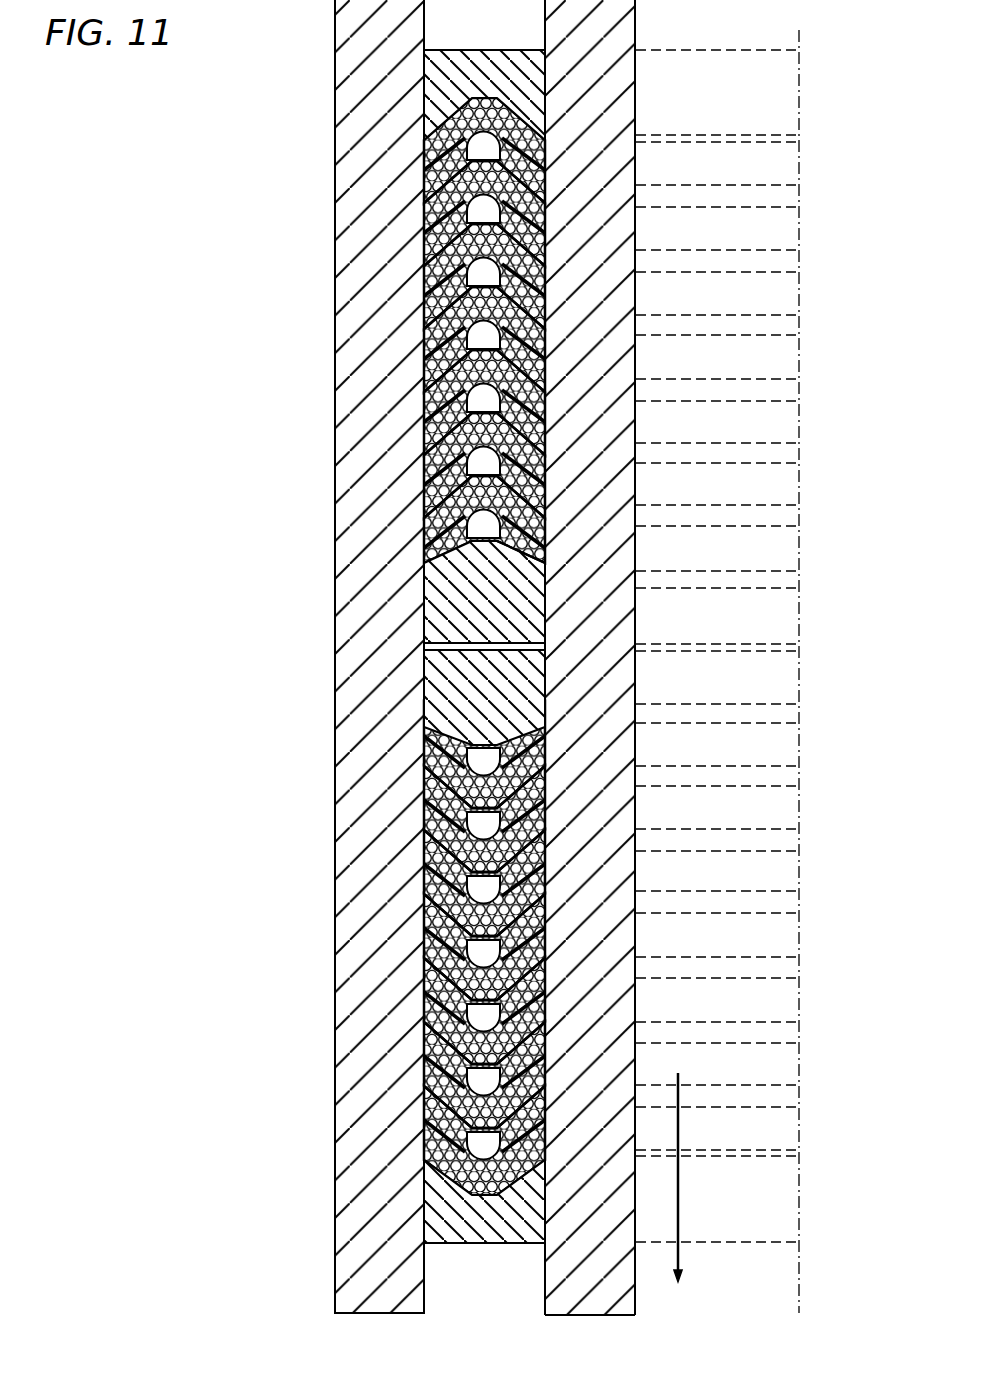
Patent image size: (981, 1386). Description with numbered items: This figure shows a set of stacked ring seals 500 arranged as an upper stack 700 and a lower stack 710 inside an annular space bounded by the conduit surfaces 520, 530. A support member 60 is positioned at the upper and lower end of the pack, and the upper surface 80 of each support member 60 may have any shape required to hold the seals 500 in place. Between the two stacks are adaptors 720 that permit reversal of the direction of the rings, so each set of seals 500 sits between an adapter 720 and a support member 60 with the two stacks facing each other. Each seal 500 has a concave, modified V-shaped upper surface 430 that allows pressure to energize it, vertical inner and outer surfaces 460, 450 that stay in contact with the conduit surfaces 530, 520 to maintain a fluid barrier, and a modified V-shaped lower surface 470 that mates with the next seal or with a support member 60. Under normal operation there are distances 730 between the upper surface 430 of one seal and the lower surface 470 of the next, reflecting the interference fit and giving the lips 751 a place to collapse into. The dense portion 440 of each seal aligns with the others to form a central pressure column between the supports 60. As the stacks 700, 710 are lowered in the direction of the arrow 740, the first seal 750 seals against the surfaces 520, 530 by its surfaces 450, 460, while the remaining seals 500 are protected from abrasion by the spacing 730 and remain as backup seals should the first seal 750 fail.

The support member 60 is at (443, 75).
The upper surface of the support member 80 is at (642, 657).
The upper seal surface 430 is at (637, 165).
The dense portion 440 is at (493, 108).
The outer surface 450 is at (421, 869).
The inner surface 460 is at (548, 823).
The lower surface 470 is at (482, 410).
The seal 500 is at (491, 629).
The conduit surface 520 is at (422, 905).
The conduit surface 530 is at (543, 780).
The upper stack 700 is at (489, 313).
The lower stack 710 is at (491, 948).
The adaptor 720 is at (580, 640).
The distance 730 is at (553, 197).
The arrow 740 is at (680, 1197).
The first seal 750 is at (423, 545).
The lip 751 is at (543, 568).